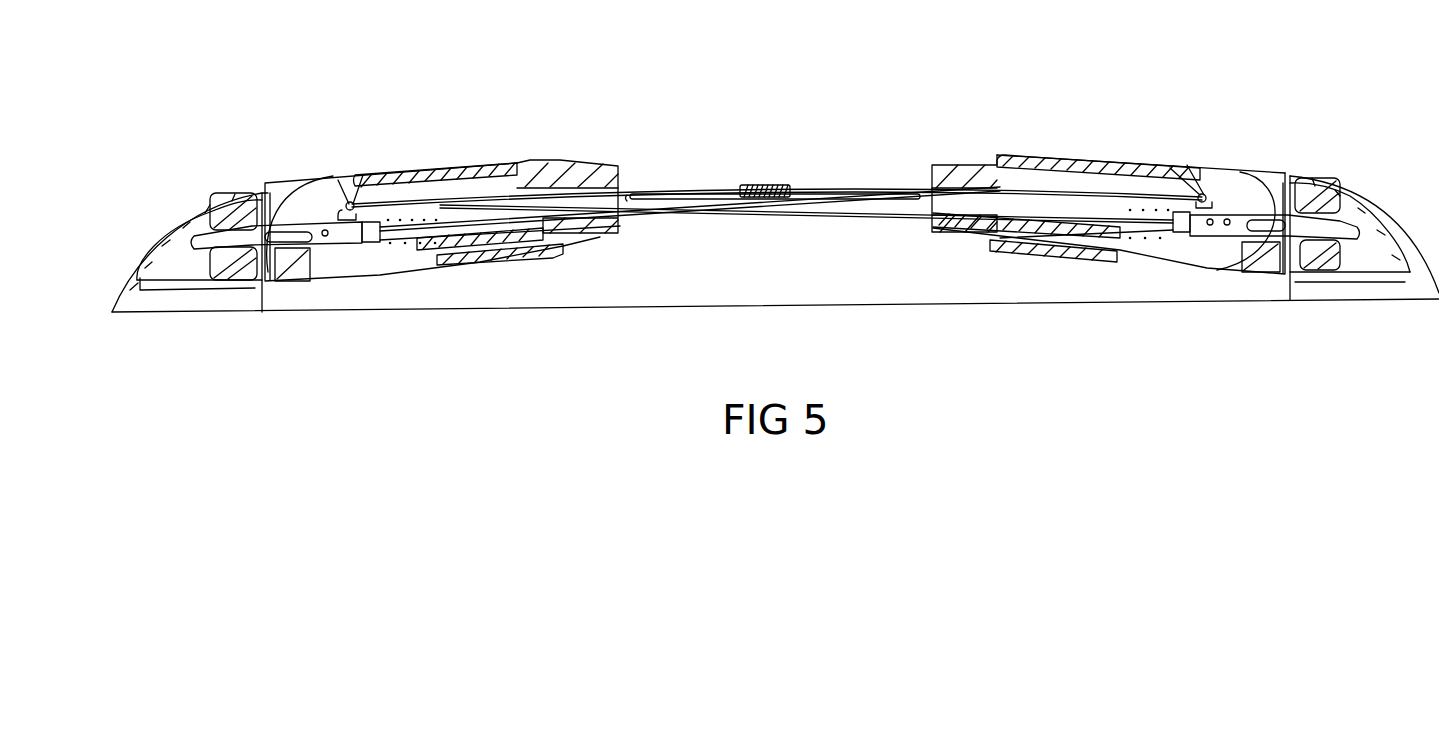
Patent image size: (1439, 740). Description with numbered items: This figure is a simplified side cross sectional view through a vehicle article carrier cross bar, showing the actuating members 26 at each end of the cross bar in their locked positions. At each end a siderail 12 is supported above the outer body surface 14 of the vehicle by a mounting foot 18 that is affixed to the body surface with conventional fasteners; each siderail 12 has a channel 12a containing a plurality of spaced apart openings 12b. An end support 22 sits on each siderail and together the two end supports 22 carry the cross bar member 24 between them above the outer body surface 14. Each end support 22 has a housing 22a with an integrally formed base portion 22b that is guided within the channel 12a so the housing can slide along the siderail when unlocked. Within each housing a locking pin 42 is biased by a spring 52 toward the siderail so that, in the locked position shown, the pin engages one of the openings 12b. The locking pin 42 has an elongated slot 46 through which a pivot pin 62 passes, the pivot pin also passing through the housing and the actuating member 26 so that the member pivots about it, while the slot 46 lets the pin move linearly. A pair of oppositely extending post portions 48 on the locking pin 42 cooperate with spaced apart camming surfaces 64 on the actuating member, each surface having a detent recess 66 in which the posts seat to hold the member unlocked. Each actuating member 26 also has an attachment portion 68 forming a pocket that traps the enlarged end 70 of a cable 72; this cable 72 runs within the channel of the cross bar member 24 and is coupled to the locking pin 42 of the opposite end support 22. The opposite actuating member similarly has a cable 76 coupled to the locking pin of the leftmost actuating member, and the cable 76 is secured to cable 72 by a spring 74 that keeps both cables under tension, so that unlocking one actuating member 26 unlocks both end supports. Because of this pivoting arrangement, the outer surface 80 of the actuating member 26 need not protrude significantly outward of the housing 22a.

The siderail 12 is at (164, 224).
The channel 12a is at (235, 272).
The opening 12b is at (192, 255).
The outer body surface 14 is at (700, 309).
The mounting foot 18 is at (138, 300).
The end support 22 is at (283, 160).
The housing 22a is at (468, 262).
The base portion 22b is at (240, 238).
The cross bar member 24 is at (602, 237).
The actuating member 26 is at (447, 167).
The locking pin 42 is at (232, 232).
The elongated slot 46 is at (302, 240).
The post portion 48 is at (400, 242).
The spring 52 is at (435, 250).
The pivot pin 62 is at (326, 237).
The camming surface 64 is at (345, 237).
The detent recess 66 is at (1230, 238).
The attachment portion 68 is at (338, 182).
The enlarged end 70 is at (350, 202).
The cable 72 is at (522, 165).
The spring 74 is at (765, 185).
The cable 76 is at (1017, 177).
The outer surface 80 is at (292, 260).